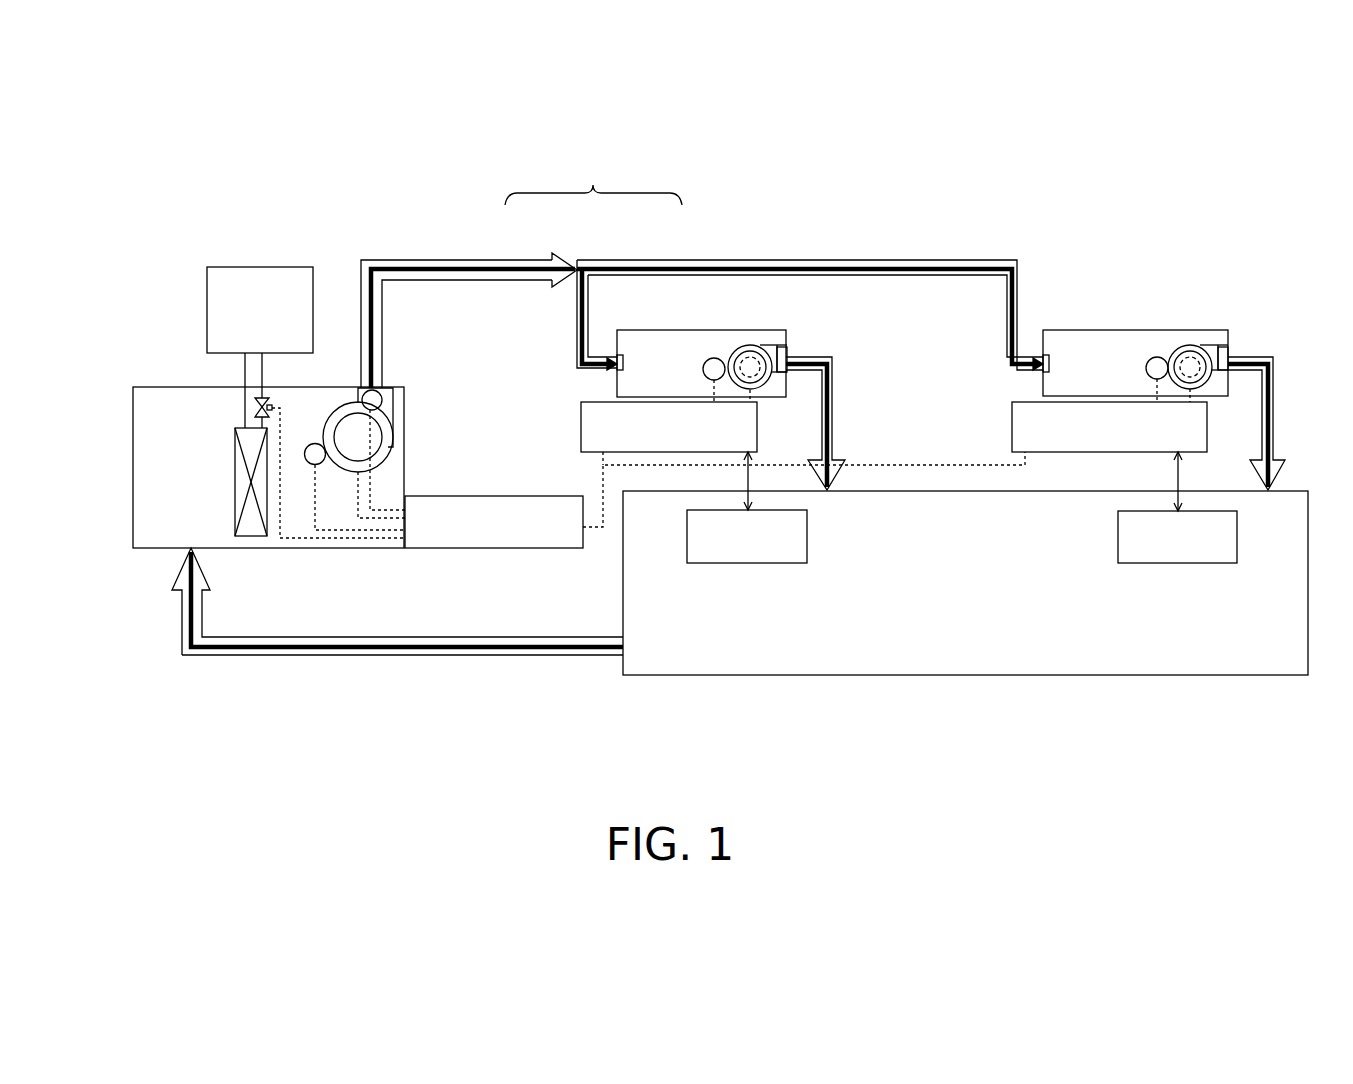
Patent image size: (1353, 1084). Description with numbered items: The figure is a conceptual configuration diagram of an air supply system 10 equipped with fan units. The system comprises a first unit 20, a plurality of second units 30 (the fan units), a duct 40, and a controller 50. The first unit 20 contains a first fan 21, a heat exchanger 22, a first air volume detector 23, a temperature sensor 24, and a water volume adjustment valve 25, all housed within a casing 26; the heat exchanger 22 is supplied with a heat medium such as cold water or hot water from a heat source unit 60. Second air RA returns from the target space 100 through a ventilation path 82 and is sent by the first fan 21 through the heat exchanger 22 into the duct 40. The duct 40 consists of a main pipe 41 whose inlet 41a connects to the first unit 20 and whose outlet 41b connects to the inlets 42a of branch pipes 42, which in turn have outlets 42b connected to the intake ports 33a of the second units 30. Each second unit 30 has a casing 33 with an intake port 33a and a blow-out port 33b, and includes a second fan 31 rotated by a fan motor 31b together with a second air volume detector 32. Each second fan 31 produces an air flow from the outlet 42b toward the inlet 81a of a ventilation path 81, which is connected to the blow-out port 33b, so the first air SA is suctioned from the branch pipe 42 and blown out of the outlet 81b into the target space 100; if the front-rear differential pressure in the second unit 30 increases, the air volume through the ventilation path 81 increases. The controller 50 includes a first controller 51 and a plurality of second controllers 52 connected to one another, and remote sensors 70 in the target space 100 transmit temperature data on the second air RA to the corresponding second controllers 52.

The air supply system 10 is at (1136, 205).
The first unit 20 is at (145, 398).
The first fan 21 is at (393, 447).
The heat exchanger 22 is at (242, 428).
The first air volume detector 23 is at (315, 443).
The temperature sensor 24 is at (382, 400).
The water volume adjustment valve 25 is at (270, 410).
The casing 26 is at (133, 467).
The second unit 30 is at (707, 332).
The second fan 31 is at (759, 351).
The fan motor 31b is at (757, 378).
The second air volume detector 32 is at (722, 359).
The casing 33 is at (749, 328).
The intake port 33a is at (615, 368).
The blow-out port 33b is at (790, 348).
The duct 40 is at (593, 185).
The main pipe 41 is at (507, 260).
The inlet 41a is at (372, 386).
The outlet 41b is at (563, 257).
The branch pipe 42 is at (692, 260).
The inlet 42a is at (574, 273).
The outlet 42b is at (614, 357).
The controller 50 is at (577, 433).
The first controller 51 is at (523, 548).
The second controller 52 is at (581, 422).
The heat source unit 60 is at (262, 267).
The remote sensor 70 is at (807, 516).
The ventilation path 81 is at (832, 372).
The inlet 81a is at (790, 358).
The outlet 81b is at (832, 484).
The ventilation path 82 is at (182, 630).
The target space 100 is at (1228, 660).